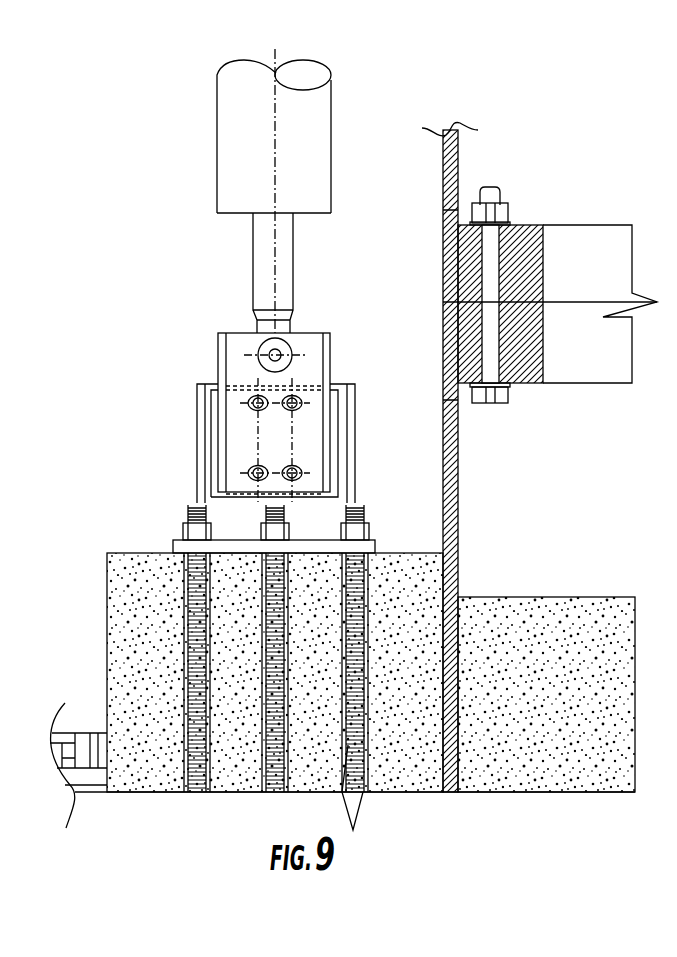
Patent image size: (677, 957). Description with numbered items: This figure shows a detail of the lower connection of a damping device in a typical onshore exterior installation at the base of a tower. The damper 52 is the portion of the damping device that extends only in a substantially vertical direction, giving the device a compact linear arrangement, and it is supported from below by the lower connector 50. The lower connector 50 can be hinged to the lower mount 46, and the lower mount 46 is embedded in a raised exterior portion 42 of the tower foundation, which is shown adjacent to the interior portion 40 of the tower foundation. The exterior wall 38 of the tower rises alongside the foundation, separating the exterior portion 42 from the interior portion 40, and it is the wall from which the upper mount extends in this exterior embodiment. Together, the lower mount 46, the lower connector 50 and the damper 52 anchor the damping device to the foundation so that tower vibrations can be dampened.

The exterior wall 38 is at (443, 157).
The interior portion of the tower foundation 40 is at (563, 709).
The exterior portion of the tower foundation 42 is at (154, 681).
The lower mount 46 is at (340, 425).
The lower connector 50 is at (312, 348).
The damper 52 is at (228, 149).